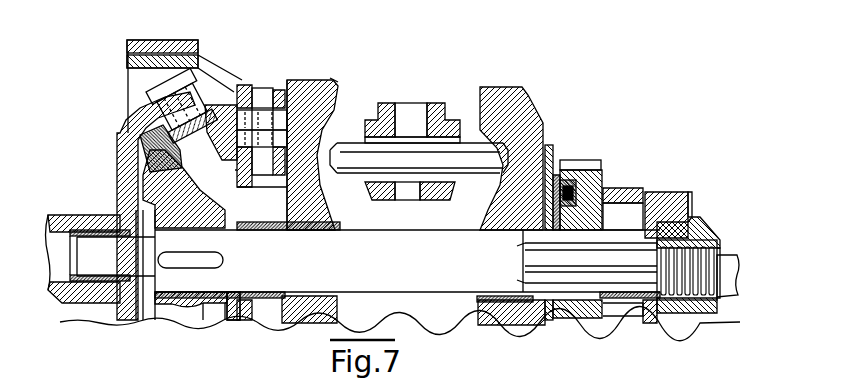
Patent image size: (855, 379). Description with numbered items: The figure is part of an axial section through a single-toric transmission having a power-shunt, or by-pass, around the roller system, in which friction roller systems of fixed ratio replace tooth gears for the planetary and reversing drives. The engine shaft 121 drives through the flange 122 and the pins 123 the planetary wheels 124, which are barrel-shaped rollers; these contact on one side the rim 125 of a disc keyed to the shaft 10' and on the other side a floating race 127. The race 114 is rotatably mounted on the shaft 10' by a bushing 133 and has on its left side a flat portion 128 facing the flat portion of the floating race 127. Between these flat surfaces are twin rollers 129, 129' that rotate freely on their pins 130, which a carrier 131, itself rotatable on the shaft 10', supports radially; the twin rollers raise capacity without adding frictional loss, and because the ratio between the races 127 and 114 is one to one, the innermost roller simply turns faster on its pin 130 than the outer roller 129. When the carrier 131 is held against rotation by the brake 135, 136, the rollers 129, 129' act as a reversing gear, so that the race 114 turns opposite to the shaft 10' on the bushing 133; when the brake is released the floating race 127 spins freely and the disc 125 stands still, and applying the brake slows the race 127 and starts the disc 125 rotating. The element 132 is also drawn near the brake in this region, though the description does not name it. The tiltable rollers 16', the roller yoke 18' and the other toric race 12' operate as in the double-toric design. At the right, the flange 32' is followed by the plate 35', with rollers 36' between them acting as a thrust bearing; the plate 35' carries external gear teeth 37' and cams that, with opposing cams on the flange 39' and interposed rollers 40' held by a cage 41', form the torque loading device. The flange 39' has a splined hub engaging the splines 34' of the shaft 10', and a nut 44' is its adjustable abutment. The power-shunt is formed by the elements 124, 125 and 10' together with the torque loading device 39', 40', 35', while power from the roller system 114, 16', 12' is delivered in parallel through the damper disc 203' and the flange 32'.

The shaft 10' is at (408, 265).
The toric race 12' is at (511, 185).
The tiltable rollers 16' is at (419, 181).
The roller yoke 18' is at (413, 136).
The flange 32' is at (580, 158).
The splines 34' is at (518, 224).
The plate 35' is at (593, 135).
The rollers 36' is at (630, 227).
The gear teeth 37' is at (605, 211).
The flange 39' is at (683, 242).
The rollers 40' is at (650, 165).
The cage 41' is at (666, 194).
The nut 44' is at (702, 247).
The race 114 is at (338, 110).
The engine shaft 121 is at (86, 215).
The flange 122 is at (120, 128).
The pins 123 is at (175, 95).
The planetary wheels 124 is at (158, 150).
The rim of disc 125 is at (148, 166).
The floating race 127 is at (244, 87).
The flat portion 128 is at (330, 88).
The twin roller 129 is at (276, 85).
The twin roller 129' is at (290, 96).
The pins 130 is at (262, 97).
The carrier 131 is at (240, 172).
The cover plate 132 is at (128, 62).
The bushing 133 is at (308, 231).
The brake 135 is at (152, 40).
The brake 136 is at (128, 47).
The damper disc 203' is at (564, 204).